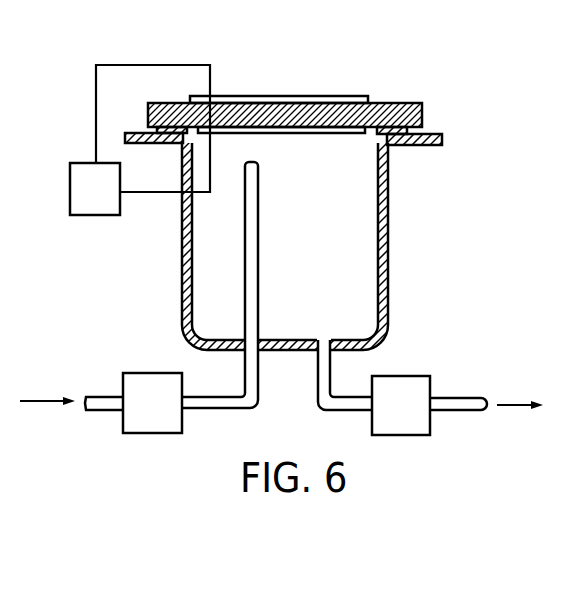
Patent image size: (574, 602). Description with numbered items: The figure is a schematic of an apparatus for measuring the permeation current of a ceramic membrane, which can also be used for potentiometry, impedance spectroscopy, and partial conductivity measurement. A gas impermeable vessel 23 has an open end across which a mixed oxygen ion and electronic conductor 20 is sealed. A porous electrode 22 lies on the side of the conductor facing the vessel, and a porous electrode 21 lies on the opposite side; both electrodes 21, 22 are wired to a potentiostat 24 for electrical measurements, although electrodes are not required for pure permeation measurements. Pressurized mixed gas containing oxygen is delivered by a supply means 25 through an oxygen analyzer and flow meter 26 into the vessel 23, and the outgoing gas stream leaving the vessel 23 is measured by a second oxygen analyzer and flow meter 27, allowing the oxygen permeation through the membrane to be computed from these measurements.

The mixed oxygen ion and electronic conductor 20 is at (422, 117).
The porous electrode 21 is at (329, 96).
The porous electrode 22 is at (328, 137).
The gas impermeable vessel 23 is at (388, 215).
The potentiostat 24 is at (110, 203).
The supply means 25 is at (45, 401).
The oxygen analyzer and flow meter 26 is at (139, 409).
The oxygen analyzer and flow meter 27 is at (388, 412).